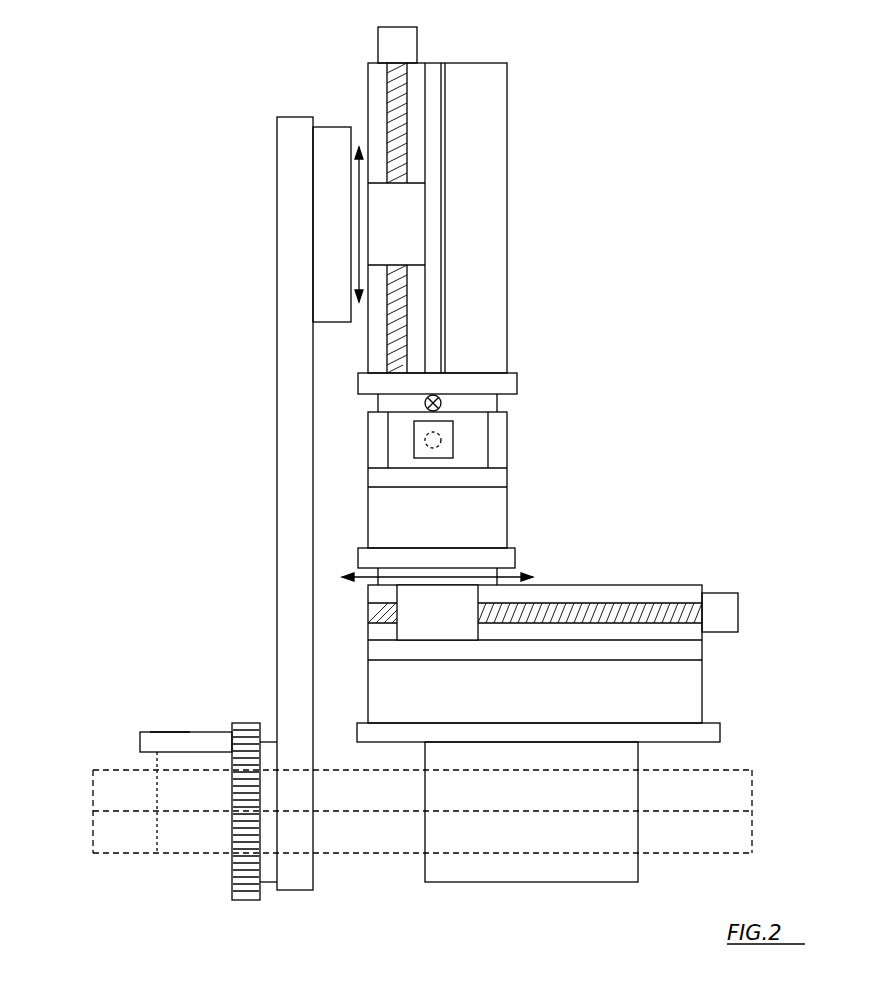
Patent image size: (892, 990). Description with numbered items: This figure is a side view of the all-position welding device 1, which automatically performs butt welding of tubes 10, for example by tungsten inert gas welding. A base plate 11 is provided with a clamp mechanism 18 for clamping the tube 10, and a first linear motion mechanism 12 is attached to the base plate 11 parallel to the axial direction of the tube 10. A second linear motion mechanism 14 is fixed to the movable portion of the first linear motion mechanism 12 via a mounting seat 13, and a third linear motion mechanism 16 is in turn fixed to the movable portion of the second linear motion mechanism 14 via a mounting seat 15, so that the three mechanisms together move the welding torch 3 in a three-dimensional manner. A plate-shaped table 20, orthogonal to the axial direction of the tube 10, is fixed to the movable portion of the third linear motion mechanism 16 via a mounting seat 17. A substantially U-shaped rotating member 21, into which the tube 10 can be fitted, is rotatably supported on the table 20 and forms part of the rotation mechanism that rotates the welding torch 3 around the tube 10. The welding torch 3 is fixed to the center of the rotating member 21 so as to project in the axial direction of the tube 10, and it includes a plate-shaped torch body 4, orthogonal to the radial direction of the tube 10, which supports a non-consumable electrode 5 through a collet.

The all-position welding device 1 is at (128, 252).
The welding torch 3 is at (195, 728).
The torch body 4 is at (172, 740).
The non-consumable electrode 5 is at (160, 755).
The tube 10 is at (117, 845).
The base plate 11 is at (712, 731).
The first linear motion mechanism 12 is at (665, 578).
The mounting seat 13 is at (516, 560).
The second linear motion mechanism 14 is at (512, 448).
The mounting seat 15 is at (505, 362).
The third linear motion mechanism 16 is at (513, 140).
The mounting seat 17 is at (332, 228).
The clamp mechanism 18 is at (533, 847).
The table 20 is at (290, 368).
The rotating member 21 is at (242, 900).